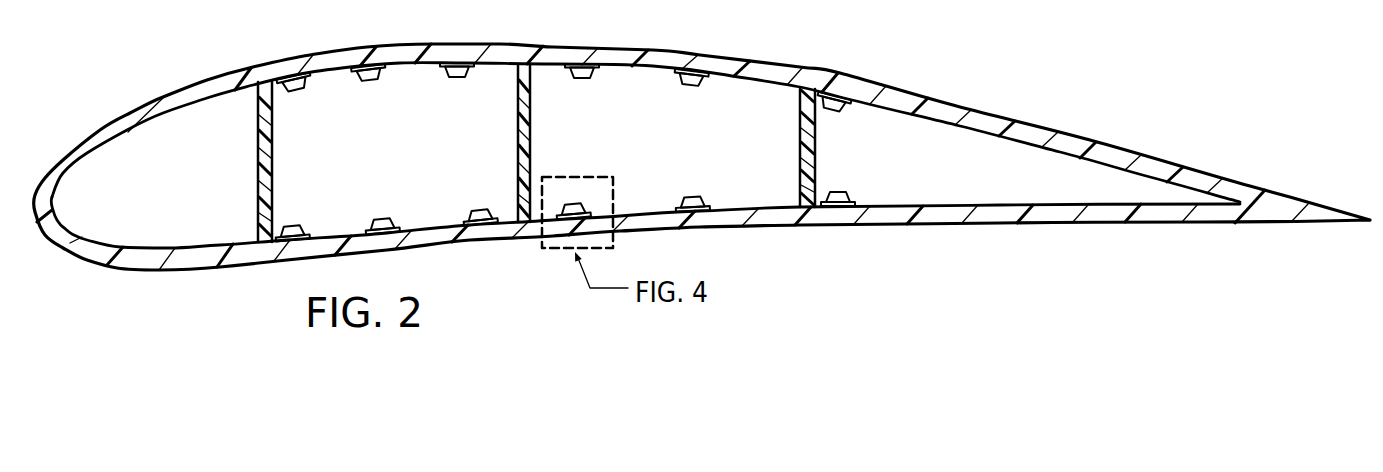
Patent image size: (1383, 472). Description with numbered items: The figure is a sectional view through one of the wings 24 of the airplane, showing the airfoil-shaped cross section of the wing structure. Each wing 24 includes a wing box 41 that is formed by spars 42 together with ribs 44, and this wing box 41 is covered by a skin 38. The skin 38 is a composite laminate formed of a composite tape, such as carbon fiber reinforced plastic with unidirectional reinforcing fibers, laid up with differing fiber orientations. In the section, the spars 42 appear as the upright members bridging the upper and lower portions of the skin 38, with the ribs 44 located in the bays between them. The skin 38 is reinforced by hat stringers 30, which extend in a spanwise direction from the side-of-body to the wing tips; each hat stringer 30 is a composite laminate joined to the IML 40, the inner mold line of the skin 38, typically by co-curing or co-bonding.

The wing 24 is at (985, 122).
The hat stringer 30 is at (368, 85).
The skin 38 is at (137, 258).
The IML (inner mold line) 40 is at (433, 216).
The wing box 41 is at (326, 82).
The spar 42 is at (258, 163).
The rib 44 is at (660, 153).